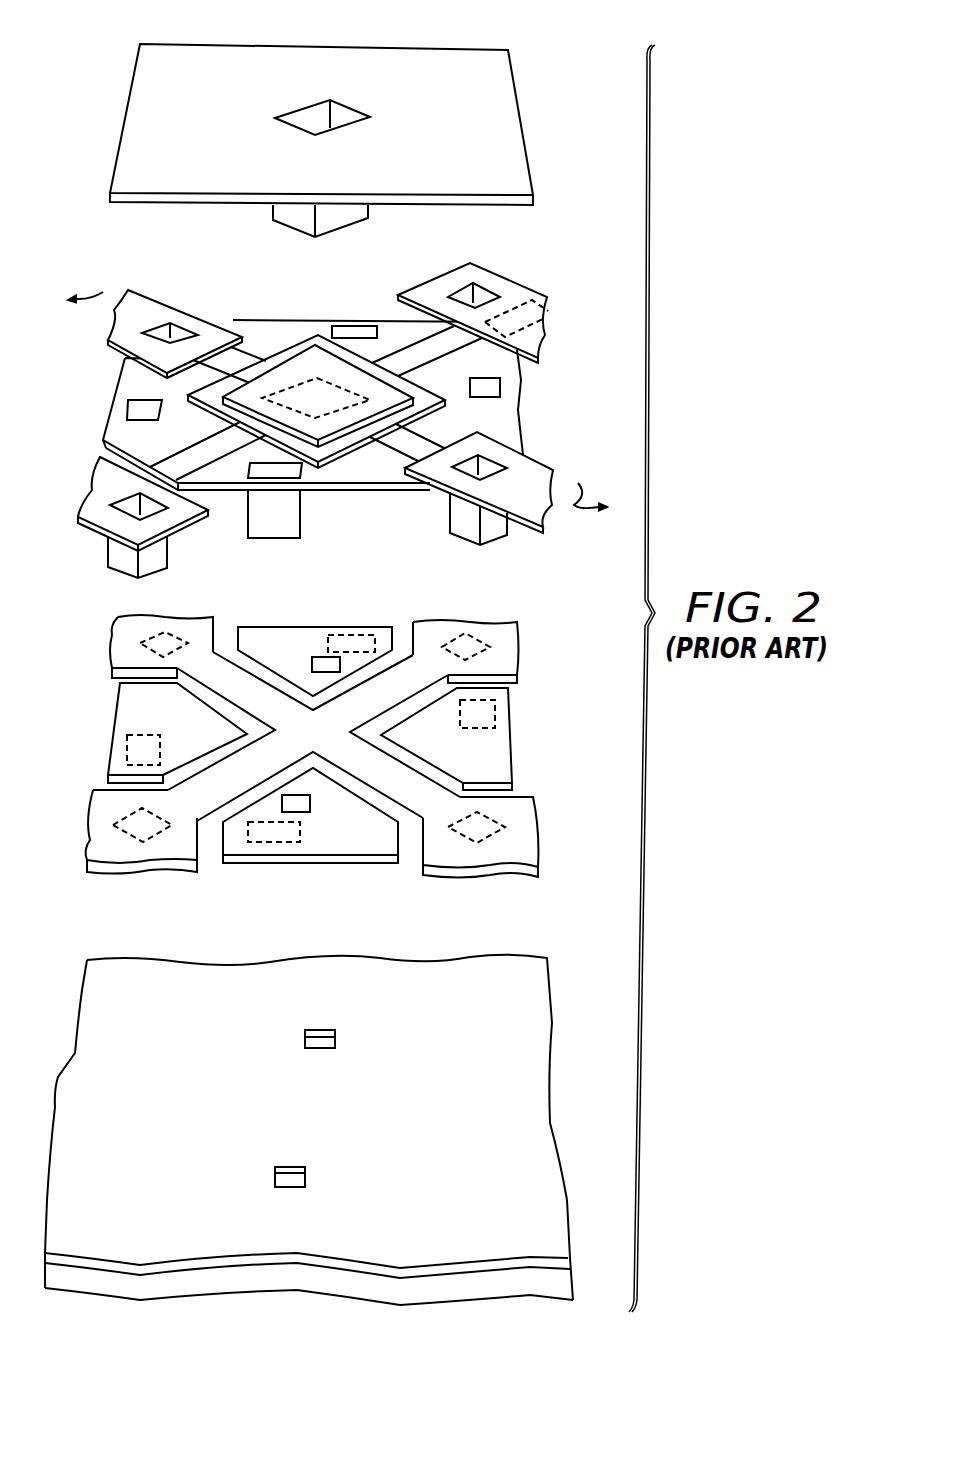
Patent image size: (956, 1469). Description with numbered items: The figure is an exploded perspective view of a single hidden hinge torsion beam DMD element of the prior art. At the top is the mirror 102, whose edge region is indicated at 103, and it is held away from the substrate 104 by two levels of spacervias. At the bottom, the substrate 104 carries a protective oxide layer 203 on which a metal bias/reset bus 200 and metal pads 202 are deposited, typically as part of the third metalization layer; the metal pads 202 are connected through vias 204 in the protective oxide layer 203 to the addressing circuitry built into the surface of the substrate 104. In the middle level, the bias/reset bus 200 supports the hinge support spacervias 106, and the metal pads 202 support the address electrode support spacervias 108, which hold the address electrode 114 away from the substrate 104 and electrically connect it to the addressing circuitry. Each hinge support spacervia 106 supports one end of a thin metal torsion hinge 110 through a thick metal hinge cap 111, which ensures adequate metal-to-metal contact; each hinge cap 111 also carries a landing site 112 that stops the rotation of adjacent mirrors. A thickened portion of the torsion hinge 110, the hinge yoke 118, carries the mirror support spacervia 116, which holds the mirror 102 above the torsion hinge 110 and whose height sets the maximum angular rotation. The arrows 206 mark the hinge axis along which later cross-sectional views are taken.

The mirror 102 is at (278, 50).
The lid plate edge 103 is at (508, 50).
The substrate 104 is at (73, 1280).
The hinge support spacervia 106 is at (457, 520).
The address electrode support spacervia 108 is at (268, 530).
The torsion hinge 110 is at (213, 357).
The hinge cap 111 is at (422, 278).
The landing site 112 is at (543, 317).
The address electrode 114 is at (307, 328).
The mirror support spacervia 116 is at (363, 212).
The hinge yoke 118 is at (385, 395).
The metal bias/reset bus 200 is at (183, 623).
The metal pads 202 is at (262, 638).
The protective oxide layer 203 is at (108, 965).
The vias 204 is at (322, 1022).
The hinge axis 206 is at (585, 482).